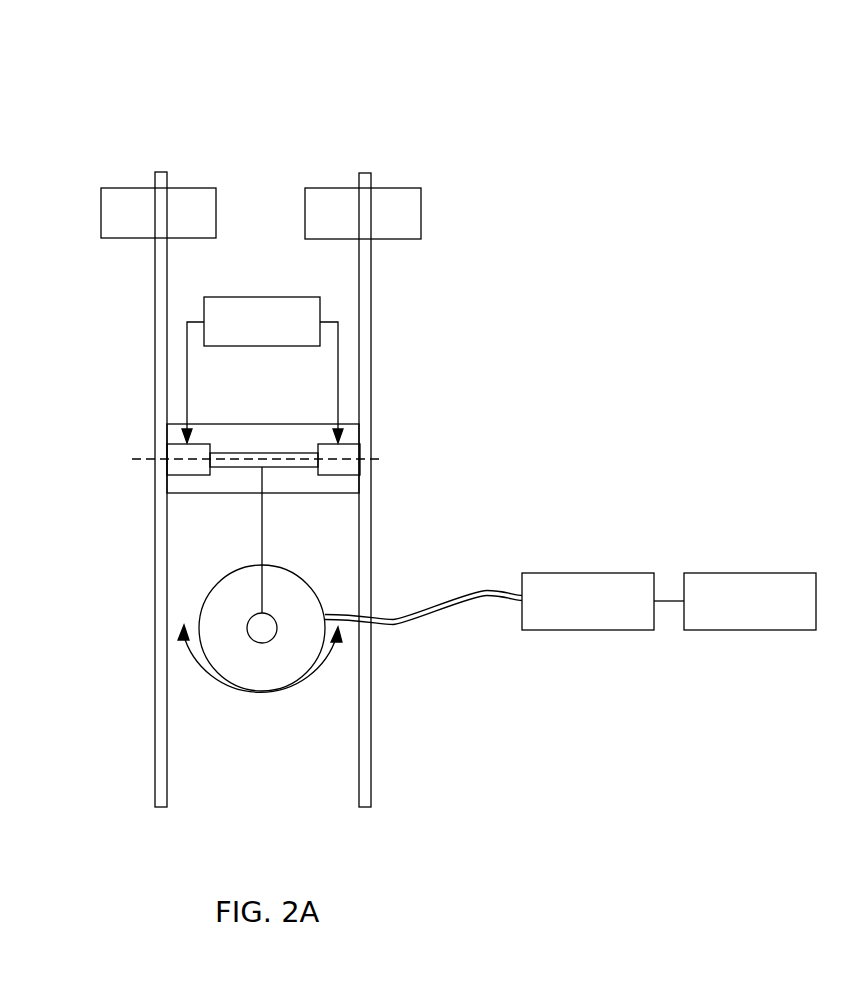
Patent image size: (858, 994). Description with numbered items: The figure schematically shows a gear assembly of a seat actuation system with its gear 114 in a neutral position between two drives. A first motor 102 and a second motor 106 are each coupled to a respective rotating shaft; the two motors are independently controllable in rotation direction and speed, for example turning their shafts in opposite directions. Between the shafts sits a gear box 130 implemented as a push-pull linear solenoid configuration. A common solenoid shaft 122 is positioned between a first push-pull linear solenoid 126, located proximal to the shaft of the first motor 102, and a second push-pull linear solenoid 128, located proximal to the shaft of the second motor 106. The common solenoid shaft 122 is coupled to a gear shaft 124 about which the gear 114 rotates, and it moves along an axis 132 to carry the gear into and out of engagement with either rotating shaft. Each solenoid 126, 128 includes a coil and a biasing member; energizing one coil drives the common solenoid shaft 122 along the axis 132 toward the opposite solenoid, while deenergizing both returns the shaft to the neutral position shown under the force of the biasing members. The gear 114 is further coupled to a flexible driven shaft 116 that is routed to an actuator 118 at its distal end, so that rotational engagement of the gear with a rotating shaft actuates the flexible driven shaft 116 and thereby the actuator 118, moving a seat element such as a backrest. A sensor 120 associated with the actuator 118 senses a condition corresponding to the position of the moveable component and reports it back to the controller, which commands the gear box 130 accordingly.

The first motor 102 is at (181, 226).
The second motor 106 is at (384, 226).
The gear 114 is at (262, 692).
The flexible driven shaft 116 is at (480, 592).
The actuator 118 is at (609, 612).
The sensor 120 is at (771, 612).
The common solenoid shaft 122 is at (245, 452).
The gear shaft 124 is at (262, 540).
The first push-pull linear solenoid 126 is at (168, 452).
The second push-pull linear solenoid 128 is at (353, 467).
The gear box 130 is at (283, 333).
The axis 132 is at (380, 458).